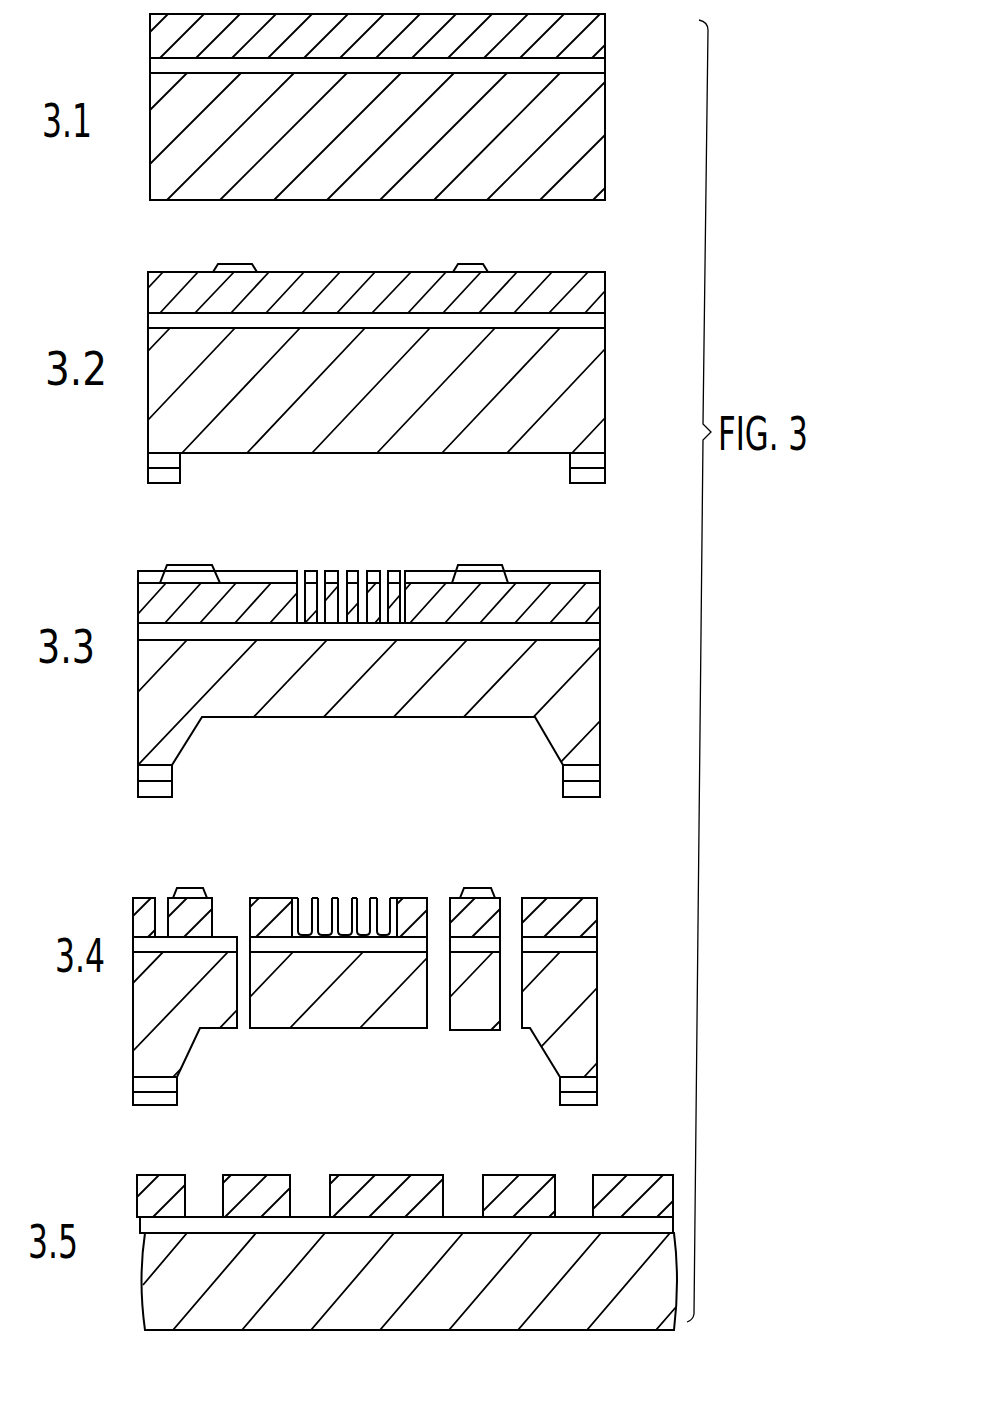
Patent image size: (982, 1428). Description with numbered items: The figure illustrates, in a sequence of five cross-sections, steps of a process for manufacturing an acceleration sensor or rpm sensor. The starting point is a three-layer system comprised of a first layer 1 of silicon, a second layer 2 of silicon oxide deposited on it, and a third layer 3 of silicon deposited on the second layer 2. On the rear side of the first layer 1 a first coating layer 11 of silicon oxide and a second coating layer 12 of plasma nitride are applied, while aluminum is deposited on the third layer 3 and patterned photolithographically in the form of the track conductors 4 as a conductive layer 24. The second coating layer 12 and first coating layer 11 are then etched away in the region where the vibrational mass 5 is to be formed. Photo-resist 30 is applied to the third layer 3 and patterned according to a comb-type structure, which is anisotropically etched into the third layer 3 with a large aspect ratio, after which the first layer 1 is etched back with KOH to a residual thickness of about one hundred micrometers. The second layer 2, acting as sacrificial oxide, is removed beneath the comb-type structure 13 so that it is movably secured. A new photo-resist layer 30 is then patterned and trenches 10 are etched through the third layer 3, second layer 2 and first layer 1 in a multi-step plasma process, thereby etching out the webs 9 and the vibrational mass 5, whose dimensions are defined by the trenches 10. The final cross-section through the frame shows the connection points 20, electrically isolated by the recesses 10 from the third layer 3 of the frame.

The first layer 1 is at (575, 143).
The second layer 2 is at (602, 67).
The third layer 3 is at (595, 42).
The track conductors 4 is at (187, 870).
The vibrational mass 5 is at (340, 1045).
The web 9 is at (457, 1042).
The trenches 10 is at (155, 880).
The first coating layer 11 is at (152, 463).
The second coating layer 12 is at (152, 482).
The comb-type structure 13 is at (373, 534).
The connection points 20 is at (255, 1175).
The conductive layer 24 is at (240, 263).
The photo-resist 30 is at (192, 563).